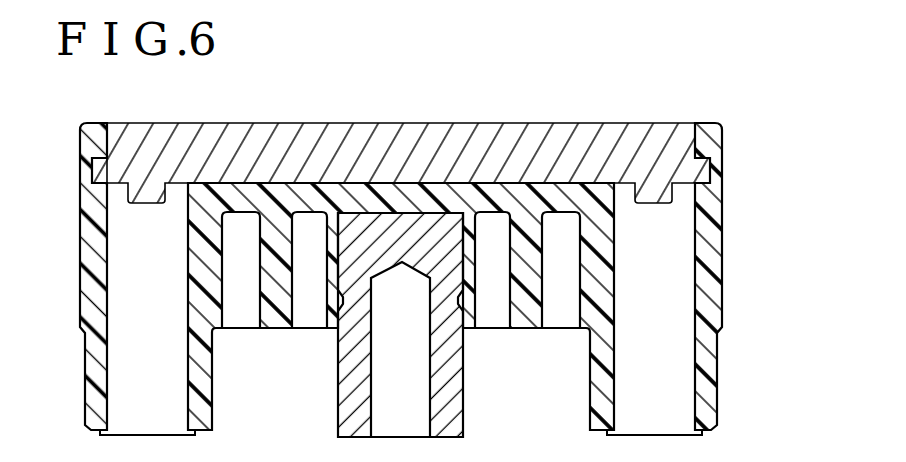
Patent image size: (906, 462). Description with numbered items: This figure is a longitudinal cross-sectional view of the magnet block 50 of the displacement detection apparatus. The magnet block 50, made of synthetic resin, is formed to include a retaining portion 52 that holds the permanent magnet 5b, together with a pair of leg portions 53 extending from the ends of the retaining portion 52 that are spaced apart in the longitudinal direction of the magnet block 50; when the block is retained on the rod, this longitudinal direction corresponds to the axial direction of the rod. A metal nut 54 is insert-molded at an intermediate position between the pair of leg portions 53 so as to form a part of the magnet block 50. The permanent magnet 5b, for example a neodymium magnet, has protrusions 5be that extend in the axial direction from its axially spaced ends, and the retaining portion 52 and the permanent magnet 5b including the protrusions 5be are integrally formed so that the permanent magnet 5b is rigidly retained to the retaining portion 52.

The permanent magnet 5b is at (348, 142).
The protrusion 5be is at (703, 174).
The magnet block 50 is at (406, 279).
The retaining portion 52 is at (86, 144).
The leg portion 53 is at (93, 366).
The nut 54 is at (458, 398).